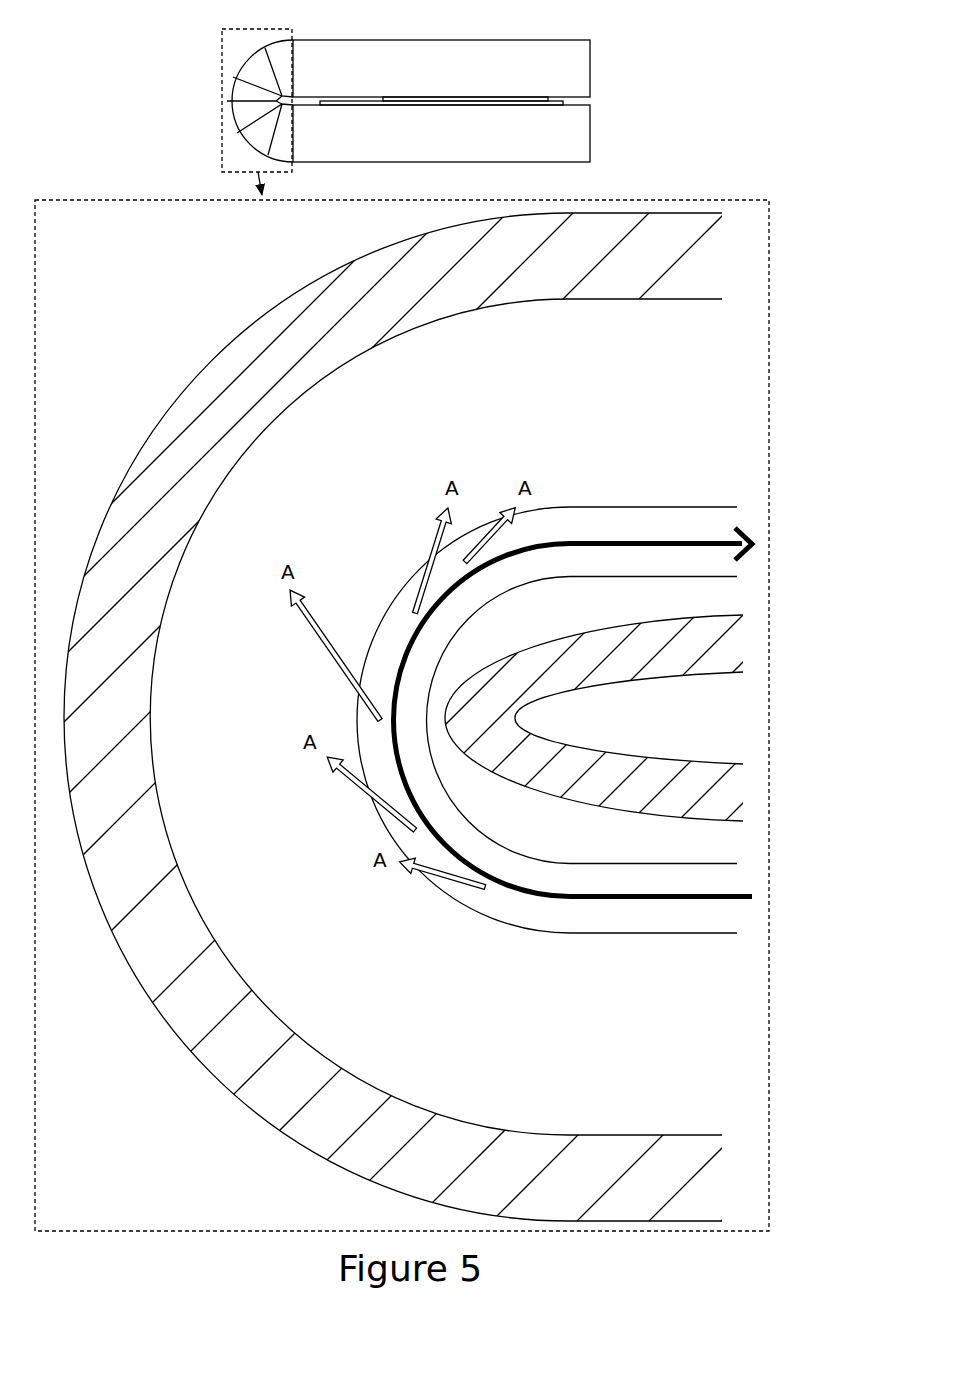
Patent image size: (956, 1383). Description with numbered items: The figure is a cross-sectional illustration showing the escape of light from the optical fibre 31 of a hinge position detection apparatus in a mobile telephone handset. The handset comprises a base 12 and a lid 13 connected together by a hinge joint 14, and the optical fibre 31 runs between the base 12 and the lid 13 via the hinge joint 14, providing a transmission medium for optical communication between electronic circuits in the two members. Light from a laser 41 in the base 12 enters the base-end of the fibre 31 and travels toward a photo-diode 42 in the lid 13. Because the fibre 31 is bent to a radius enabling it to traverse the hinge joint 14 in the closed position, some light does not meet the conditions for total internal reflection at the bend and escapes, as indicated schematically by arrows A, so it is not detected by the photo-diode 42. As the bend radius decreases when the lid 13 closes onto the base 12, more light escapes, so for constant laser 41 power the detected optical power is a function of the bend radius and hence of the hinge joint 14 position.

The base 12 is at (441, 131).
The lid 13 is at (441, 70).
The hinge joint 14 is at (576, 1104).
The optical fibre 31 is at (604, 487).
The laser 41 is at (624, 819).
The photo-diode 42 is at (626, 615).